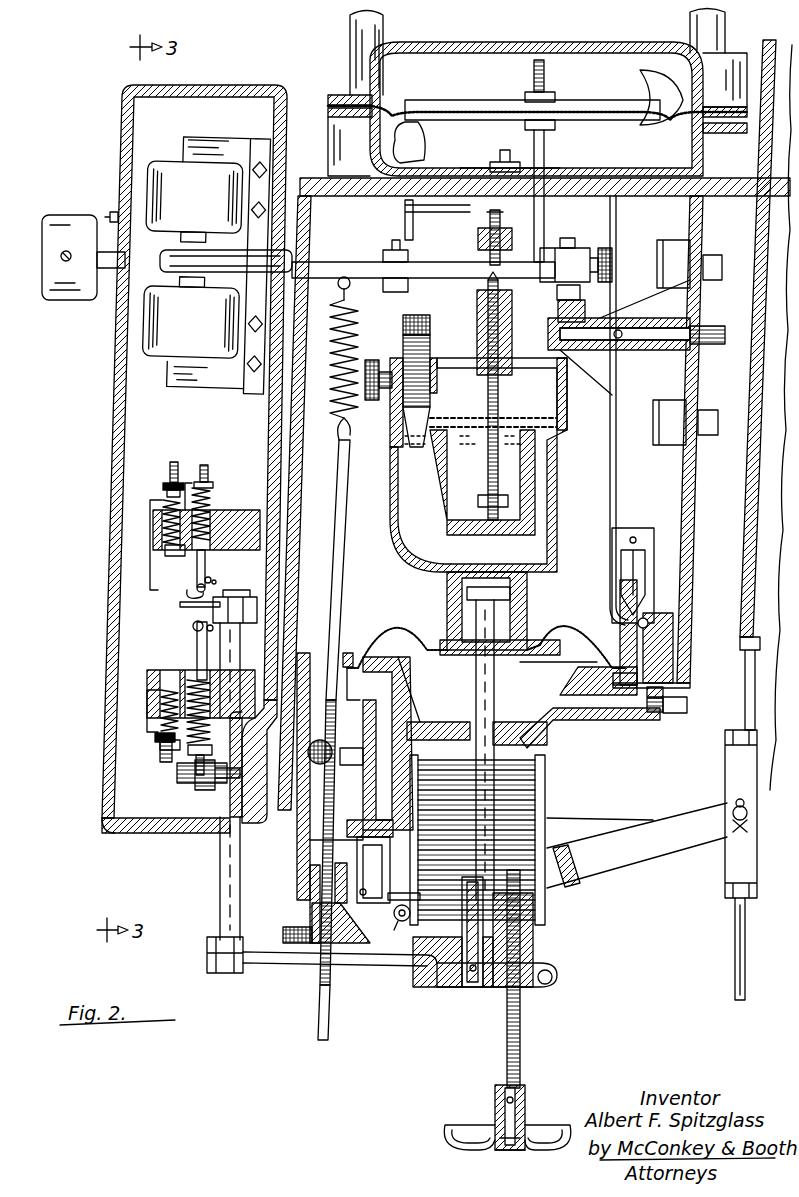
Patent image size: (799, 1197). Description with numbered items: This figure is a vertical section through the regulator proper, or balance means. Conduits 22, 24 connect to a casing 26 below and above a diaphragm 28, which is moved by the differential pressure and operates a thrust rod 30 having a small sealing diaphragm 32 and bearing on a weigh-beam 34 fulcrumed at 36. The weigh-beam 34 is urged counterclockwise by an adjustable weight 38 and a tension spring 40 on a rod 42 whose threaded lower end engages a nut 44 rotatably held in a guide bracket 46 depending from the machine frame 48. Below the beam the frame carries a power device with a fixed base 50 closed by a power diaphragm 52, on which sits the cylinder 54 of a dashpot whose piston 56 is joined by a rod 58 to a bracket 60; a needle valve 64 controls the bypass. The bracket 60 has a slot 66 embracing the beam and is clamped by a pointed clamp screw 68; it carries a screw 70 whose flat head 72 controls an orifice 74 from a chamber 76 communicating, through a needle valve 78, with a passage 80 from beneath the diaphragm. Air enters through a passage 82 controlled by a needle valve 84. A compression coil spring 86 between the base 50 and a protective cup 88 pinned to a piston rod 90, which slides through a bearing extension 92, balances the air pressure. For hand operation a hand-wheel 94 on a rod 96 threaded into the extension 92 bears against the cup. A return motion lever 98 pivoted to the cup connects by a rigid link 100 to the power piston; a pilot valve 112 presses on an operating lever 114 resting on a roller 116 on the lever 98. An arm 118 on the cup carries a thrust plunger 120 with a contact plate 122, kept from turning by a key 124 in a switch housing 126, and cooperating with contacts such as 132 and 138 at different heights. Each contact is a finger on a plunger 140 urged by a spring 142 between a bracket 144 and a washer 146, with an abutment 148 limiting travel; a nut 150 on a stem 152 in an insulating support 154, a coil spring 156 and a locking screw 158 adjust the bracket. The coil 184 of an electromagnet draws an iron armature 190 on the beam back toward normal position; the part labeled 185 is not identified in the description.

The conduit 22 is at (348, 35).
The conduit 24 is at (726, 35).
The casing 26 is at (530, 48).
The diaphragm 28 is at (395, 112).
The thrust rod 30 is at (545, 152).
The sealing diaphragm 32 is at (518, 160).
The weigh-beam 34 is at (432, 262).
The fulcrum 36 is at (405, 232).
The adjustable weight 38 is at (78, 207).
The tension spring 40 is at (358, 332).
The rod 42 is at (352, 490).
The nut 44 is at (307, 925).
The guide bracket 46 is at (296, 840).
The machine frame 48 is at (292, 578).
The fixed base 50 is at (547, 728).
The power diaphragm 52 is at (540, 625).
The cylinder 54 is at (548, 465).
The piston 56 is at (510, 500).
The rod 58 is at (500, 388).
The bracket 60 is at (553, 250).
The needle valve 64 is at (400, 432).
The slot 66 is at (478, 292).
The clamp screw 68 is at (485, 242).
The adjustable screw 70 is at (605, 252).
The flat head 72 is at (582, 295).
The orifice 74 is at (558, 312).
The chamber 76 is at (565, 350).
The needle valve 78 is at (655, 562).
The passage 80 is at (645, 638).
The passage 82 is at (400, 700).
The needle valve 84 is at (365, 758).
The compression coil spring 86 is at (548, 790).
The protective cup 88 is at (545, 902).
The piston rod 90 is at (496, 682).
The bearing extension 92 is at (535, 922).
The hand-wheel 94 is at (480, 1126).
The rod 96 is at (507, 1018).
The return motion lever 98 is at (620, 860).
The rigid link 100 is at (735, 908).
The pilot valve 112 is at (378, 862).
The operating lever 114 is at (392, 900).
The roller 116 is at (400, 924).
The arm 118 is at (395, 985).
The thrust plunger 120 is at (220, 870).
The contact plate 122 is at (180, 605).
The key 124 is at (185, 790).
The switch housing 126 is at (140, 834).
The contact 132 is at (193, 594).
The contact 138 is at (193, 625).
The plunger 140 is at (206, 572).
The spring 142 is at (210, 482).
The bracket 144 is at (197, 482).
The washer 146 is at (182, 558).
The abutment 148 is at (205, 480).
The nut 150 is at (164, 484).
The stem 152 is at (170, 462).
The support 154 is at (243, 510).
The coil spring 156 is at (160, 525).
The screw 158 is at (152, 540).
The coil 184 is at (175, 350).
The coil 185 is at (190, 170).
The iron armature 190 is at (300, 262).